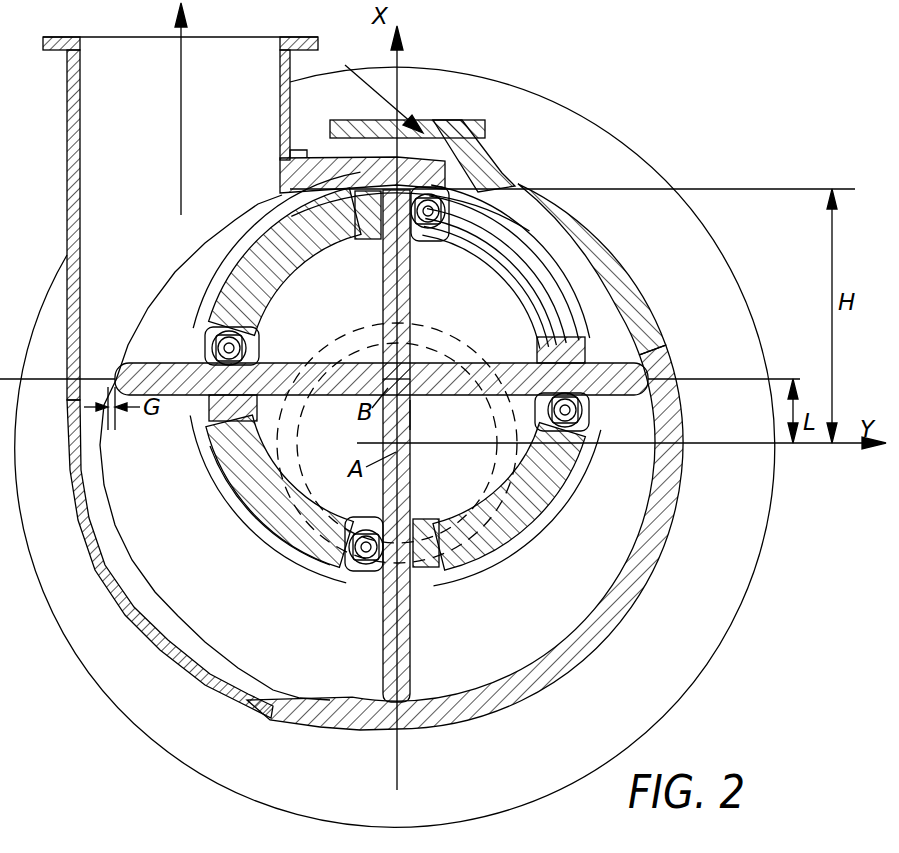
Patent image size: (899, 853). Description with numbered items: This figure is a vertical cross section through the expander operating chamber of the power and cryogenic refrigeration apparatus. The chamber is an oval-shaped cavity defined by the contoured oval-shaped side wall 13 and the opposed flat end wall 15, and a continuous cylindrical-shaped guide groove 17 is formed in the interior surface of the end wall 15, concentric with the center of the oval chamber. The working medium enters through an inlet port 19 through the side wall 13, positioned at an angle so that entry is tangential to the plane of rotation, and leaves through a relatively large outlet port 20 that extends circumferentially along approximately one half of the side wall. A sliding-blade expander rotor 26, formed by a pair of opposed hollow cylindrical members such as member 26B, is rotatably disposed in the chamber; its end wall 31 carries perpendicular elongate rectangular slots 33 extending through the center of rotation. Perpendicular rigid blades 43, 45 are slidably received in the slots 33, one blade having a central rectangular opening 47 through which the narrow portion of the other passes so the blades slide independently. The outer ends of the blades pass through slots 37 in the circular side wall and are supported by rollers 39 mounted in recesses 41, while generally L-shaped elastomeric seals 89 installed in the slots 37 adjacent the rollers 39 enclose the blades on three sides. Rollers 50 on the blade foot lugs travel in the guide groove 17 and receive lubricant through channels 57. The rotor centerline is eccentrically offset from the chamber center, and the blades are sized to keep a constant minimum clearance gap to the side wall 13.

The contoured oval-shaped side wall 13 is at (636, 535).
The flat end wall 15 is at (484, 648).
The guide groove 17 is at (432, 350).
The inlet port 19 is at (487, 192).
The outlet port 20 is at (175, 672).
The sliding-blade expander rotor 26 is at (238, 517).
The hollow cylindrical member 26B is at (240, 483).
The end wall 31 is at (331, 313).
The elongate rectangular slot 33 is at (408, 300).
The slot 37 is at (366, 236).
The roller 39 is at (446, 196).
The recess 41 is at (445, 240).
The rigid blade 43 is at (410, 660).
The rigid blade 45 is at (650, 362).
The central rectangular opening 47 is at (410, 418).
The roller 50 is at (375, 340).
The channel 57 is at (432, 228).
The L-shaped elastomeric seal 89 is at (457, 570).